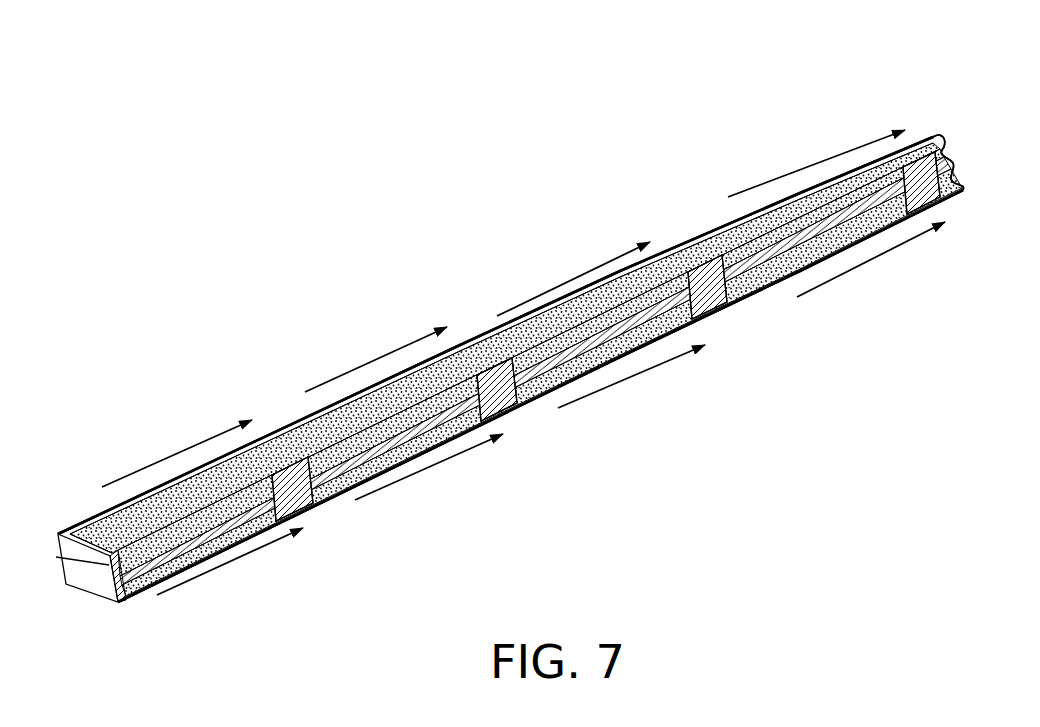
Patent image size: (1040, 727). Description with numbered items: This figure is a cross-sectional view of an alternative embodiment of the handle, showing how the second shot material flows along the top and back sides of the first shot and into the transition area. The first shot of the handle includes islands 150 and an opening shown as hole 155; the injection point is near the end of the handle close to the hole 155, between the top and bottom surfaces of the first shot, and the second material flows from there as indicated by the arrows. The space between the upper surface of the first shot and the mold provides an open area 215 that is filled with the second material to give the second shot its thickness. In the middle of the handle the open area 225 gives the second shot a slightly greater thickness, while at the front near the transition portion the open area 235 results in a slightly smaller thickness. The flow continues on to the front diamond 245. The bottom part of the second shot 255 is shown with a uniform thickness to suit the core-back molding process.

The islands 150 is at (288, 462).
The hole 155 is at (126, 582).
The open area 215 is at (133, 516).
The open area 225 is at (580, 303).
The open area 235 is at (862, 170).
The front diamond 245 is at (915, 156).
The bottom layer 255 is at (862, 233).